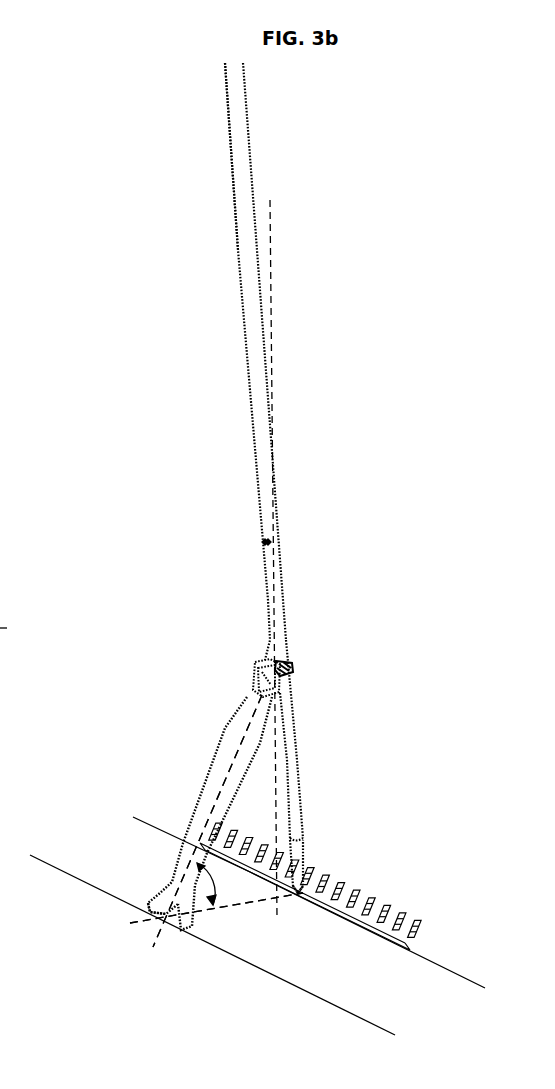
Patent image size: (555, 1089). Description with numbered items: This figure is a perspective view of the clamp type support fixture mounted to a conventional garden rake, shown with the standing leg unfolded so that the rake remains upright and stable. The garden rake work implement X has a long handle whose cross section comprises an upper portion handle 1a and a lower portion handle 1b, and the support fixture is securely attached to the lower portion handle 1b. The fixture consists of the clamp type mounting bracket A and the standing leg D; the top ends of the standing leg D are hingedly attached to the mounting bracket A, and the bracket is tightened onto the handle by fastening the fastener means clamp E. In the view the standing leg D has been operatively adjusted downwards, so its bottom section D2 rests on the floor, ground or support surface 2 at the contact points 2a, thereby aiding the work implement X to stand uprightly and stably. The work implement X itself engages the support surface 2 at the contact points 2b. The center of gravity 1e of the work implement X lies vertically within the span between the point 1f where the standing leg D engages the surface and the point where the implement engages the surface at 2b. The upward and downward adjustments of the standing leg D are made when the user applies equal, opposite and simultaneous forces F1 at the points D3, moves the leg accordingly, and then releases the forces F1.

The work implement X is at (220, 104).
The upper portion handle 1a is at (228, 215).
The center of gravity 1e is at (262, 542).
The clamp type mounting bracket A is at (250, 668).
The fastener means clamp E is at (291, 668).
The lower portion handle 1b is at (294, 700).
The standing leg D is at (205, 778).
The points of force application D3 is at (220, 728).
The forces F1 is at (217, 730).
The floor, ground or support surface 2 is at (242, 962).
The contact points of standing leg 2a is at (152, 922).
The contact points of work implement 2b is at (300, 903).
The point where standing leg engages the surface 1f is at (272, 905).
The bottom section D2 is at (185, 935).